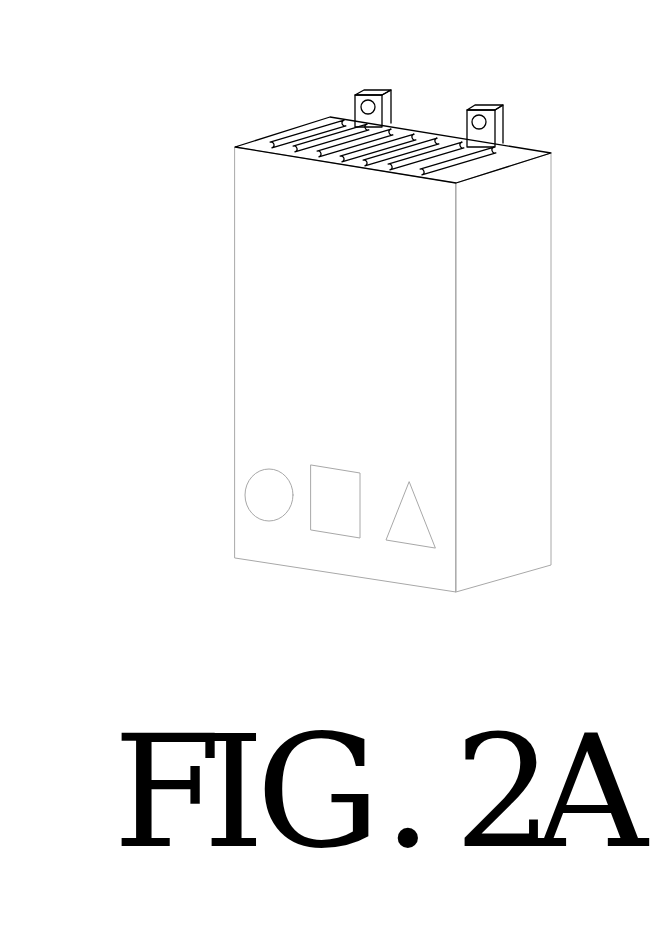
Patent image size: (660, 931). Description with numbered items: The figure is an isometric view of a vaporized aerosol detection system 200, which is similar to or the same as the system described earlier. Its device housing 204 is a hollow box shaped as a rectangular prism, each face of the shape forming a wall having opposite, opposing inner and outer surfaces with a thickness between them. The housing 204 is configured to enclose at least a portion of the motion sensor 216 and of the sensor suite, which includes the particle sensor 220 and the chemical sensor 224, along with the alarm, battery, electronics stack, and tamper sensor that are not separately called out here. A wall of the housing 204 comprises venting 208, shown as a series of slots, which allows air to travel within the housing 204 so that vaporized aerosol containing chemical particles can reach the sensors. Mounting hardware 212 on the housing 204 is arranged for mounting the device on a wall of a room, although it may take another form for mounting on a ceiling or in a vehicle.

The vaporized aerosol detection system 200 is at (445, 62).
The device housing 204 is at (235, 257).
The venting 208 is at (340, 137).
The mounting hardware 212 is at (500, 117).
The motion sensor 216 is at (262, 510).
The particle sensor 220 is at (340, 525).
The chemical sensor 224 is at (412, 536).